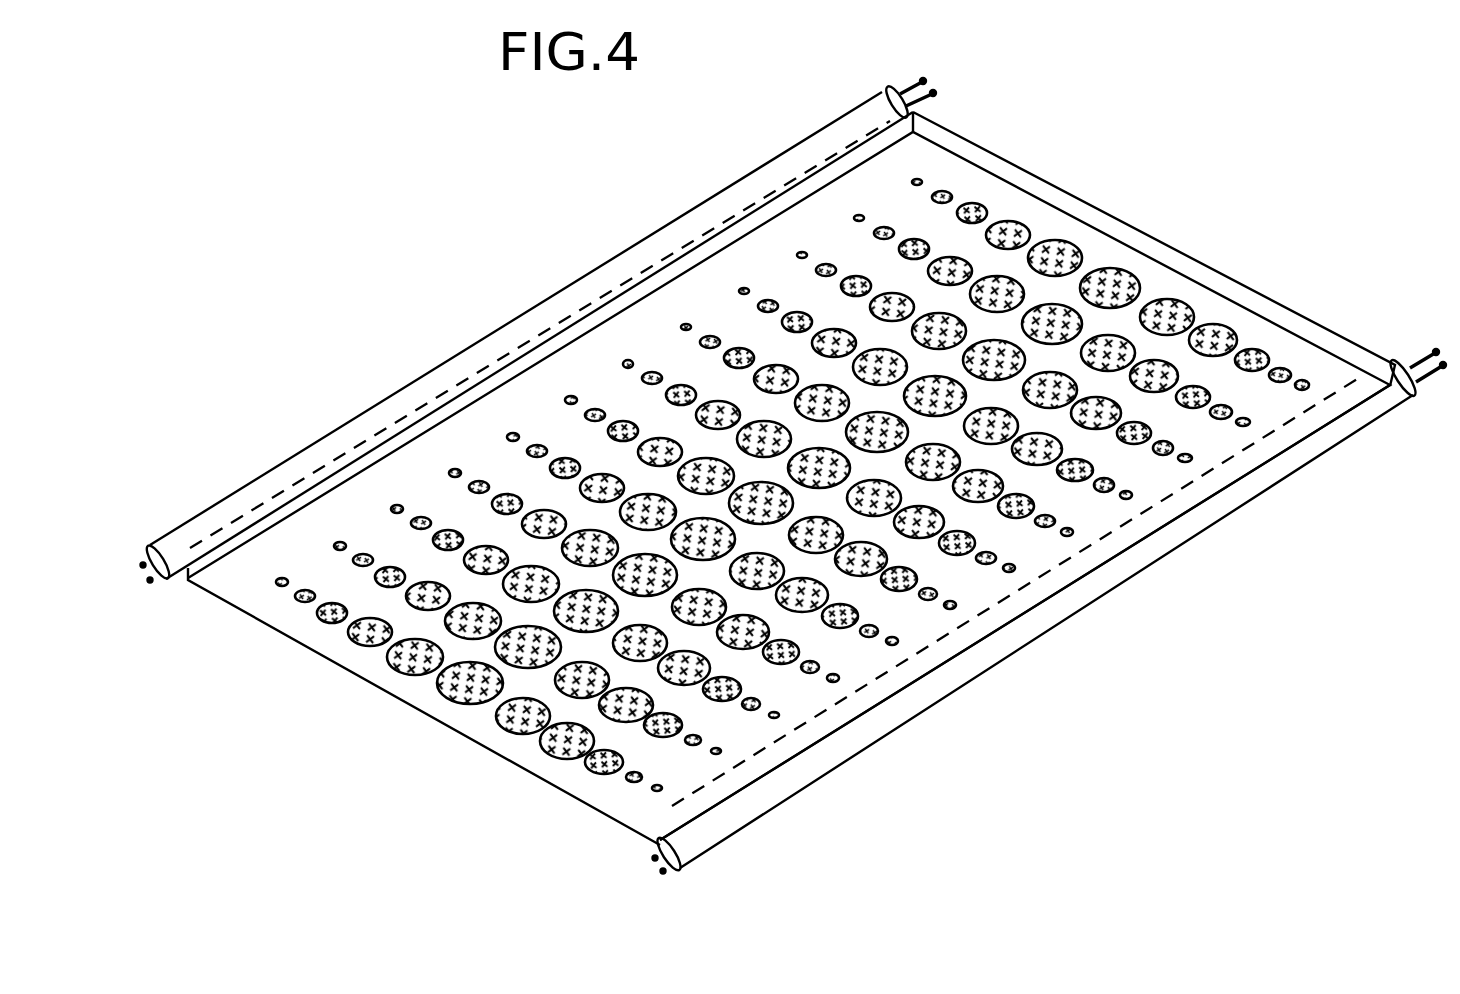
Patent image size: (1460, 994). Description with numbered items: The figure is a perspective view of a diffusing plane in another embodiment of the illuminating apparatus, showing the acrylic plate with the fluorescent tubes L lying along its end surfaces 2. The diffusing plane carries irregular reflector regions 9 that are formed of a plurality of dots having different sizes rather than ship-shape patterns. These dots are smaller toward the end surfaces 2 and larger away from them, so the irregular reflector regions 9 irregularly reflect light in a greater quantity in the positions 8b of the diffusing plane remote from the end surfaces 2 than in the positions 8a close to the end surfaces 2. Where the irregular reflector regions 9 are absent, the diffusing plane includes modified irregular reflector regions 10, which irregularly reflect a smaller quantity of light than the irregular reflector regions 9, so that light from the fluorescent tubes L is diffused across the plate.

The end surfaces 2 is at (794, 476).
The fluorescent tubes L is at (794, 476).
The positions close to the end surfaces 8a is at (952, 174).
The positions remote from the end surfaces 8b is at (1118, 262).
The irregular reflector regions 9 is at (1236, 328).
The modified irregular reflector regions 10 is at (492, 404).